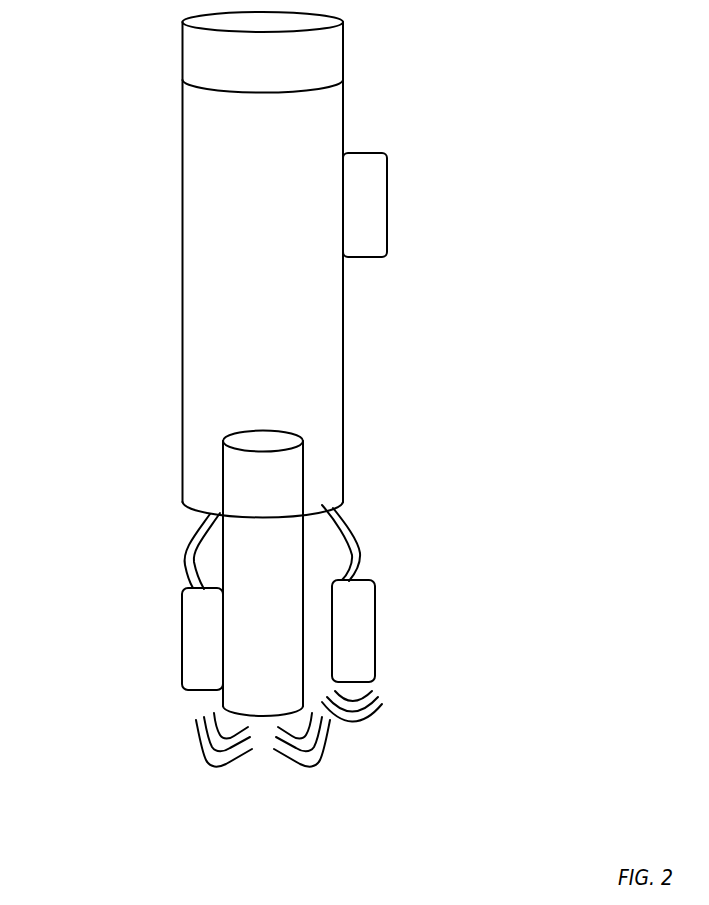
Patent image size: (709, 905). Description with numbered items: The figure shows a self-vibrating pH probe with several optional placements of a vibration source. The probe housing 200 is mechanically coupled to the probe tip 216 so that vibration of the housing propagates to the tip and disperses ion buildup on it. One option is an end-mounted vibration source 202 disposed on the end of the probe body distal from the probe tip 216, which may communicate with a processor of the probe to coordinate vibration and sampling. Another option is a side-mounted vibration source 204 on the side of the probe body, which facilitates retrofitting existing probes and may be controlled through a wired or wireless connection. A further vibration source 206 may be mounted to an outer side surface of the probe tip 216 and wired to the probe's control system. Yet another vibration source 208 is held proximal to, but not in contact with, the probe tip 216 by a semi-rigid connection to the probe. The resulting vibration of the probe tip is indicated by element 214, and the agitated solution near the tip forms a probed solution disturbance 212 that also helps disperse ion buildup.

The probe housing 200 is at (343, 357).
The end-mounted vibration source 202 is at (343, 47).
The side-mounted vibration source 204 is at (387, 192).
The vibration source mounted to probe tip 206 is at (182, 606).
The proximal vibration source 208 is at (375, 632).
The probed solution disturbance 212 is at (368, 712).
The vibration of the probe tip 214 is at (259, 768).
The probe tip 216 is at (207, 705).